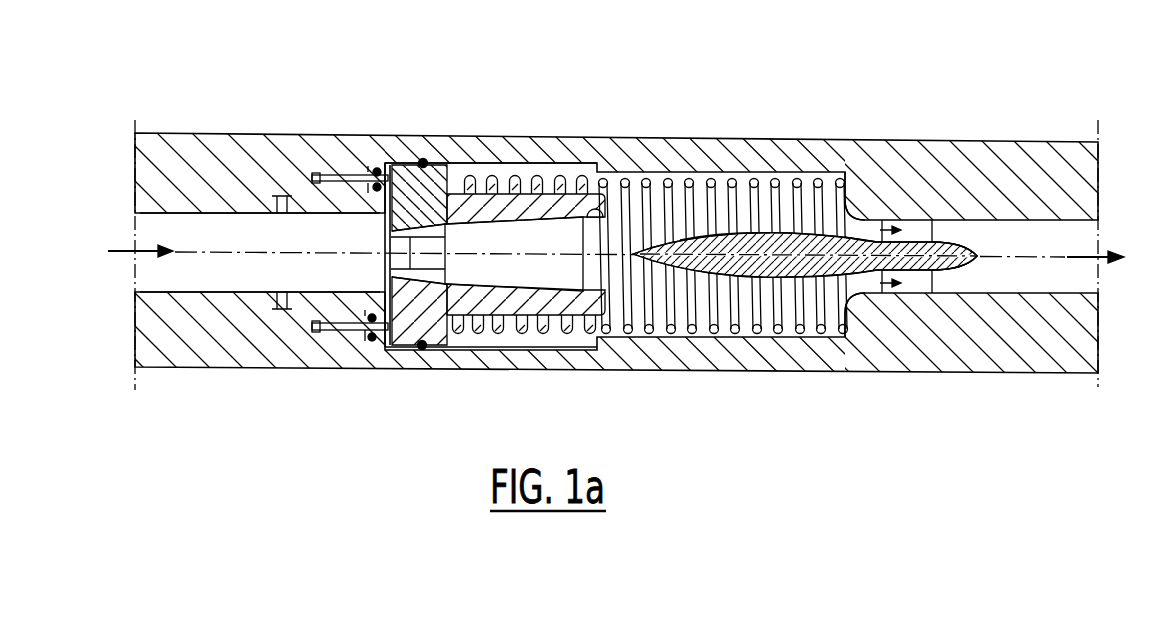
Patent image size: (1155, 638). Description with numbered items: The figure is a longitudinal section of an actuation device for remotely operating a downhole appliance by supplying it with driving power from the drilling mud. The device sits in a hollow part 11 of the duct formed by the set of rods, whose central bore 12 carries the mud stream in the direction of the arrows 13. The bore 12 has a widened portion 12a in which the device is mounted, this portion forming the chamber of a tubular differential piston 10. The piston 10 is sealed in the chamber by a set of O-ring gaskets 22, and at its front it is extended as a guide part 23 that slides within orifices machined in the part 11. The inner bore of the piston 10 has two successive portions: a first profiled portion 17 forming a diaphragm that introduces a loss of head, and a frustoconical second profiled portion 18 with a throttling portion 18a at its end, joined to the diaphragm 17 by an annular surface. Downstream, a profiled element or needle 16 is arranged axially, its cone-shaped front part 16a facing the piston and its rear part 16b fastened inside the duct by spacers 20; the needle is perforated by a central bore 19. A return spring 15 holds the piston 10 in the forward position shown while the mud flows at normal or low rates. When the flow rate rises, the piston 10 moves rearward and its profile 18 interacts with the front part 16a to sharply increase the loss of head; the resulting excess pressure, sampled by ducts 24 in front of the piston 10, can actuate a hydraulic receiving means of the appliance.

The differential piston 10 is at (498, 203).
The part of the duct 11 is at (165, 148).
The central bore 12 is at (222, 288).
The widened portion 12a is at (554, 172).
The arrows 13 is at (123, 250).
The return spring 15 is at (670, 198).
The profiled element 16 is at (766, 233).
The cone-shaped front part 16a is at (719, 231).
The rear part 16b is at (849, 207).
The first profiled portion 17 is at (406, 238).
The second profiled portion 18 is at (503, 292).
The throttling portion 18a is at (596, 213).
The central bore 19 is at (913, 253).
The spacers 20 is at (918, 286).
The O-ring gaskets 22 is at (424, 158).
The guide part 23 is at (351, 333).
The ducts 24 is at (279, 194).